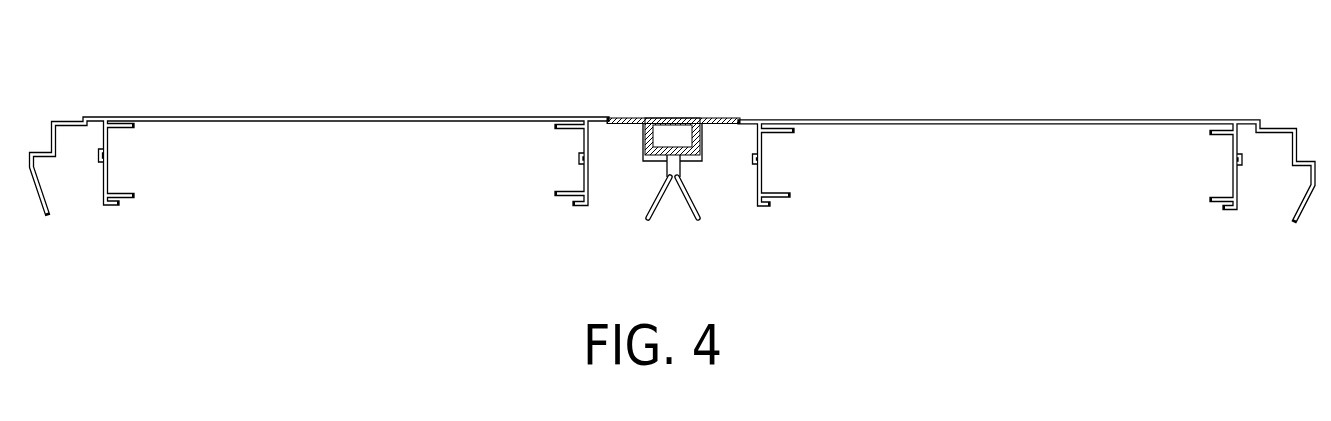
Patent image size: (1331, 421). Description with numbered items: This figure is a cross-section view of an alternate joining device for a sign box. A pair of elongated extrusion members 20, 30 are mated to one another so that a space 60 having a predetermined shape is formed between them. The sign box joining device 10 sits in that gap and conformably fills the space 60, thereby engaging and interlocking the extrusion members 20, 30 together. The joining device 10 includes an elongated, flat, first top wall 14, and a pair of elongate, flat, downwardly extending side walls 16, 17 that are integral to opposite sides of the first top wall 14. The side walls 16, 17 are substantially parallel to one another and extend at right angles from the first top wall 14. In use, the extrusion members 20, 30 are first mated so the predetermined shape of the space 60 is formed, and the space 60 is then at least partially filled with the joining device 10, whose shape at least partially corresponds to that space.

The sign box joining device 10 is at (675, 117).
The first top wall 14 is at (722, 117).
The side wall 16 is at (702, 139).
The side wall 17 is at (643, 139).
The extrusion member 20 is at (1035, 120).
The extrusion member 30 is at (210, 118).
The space 60 is at (666, 138).